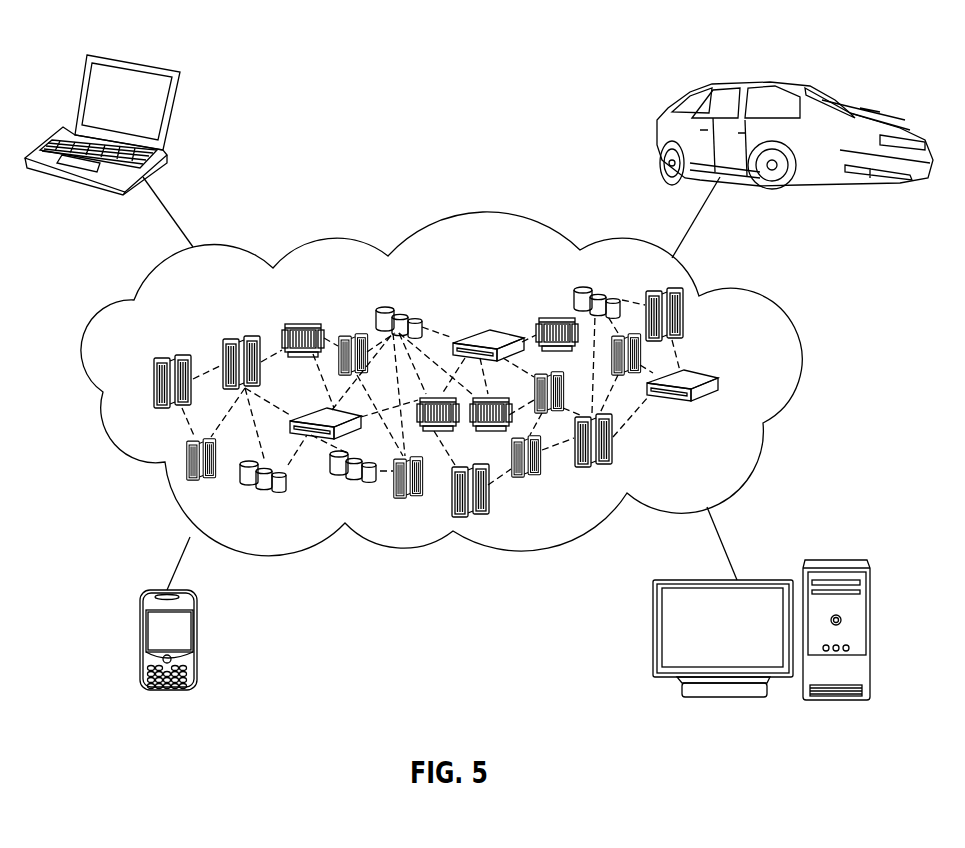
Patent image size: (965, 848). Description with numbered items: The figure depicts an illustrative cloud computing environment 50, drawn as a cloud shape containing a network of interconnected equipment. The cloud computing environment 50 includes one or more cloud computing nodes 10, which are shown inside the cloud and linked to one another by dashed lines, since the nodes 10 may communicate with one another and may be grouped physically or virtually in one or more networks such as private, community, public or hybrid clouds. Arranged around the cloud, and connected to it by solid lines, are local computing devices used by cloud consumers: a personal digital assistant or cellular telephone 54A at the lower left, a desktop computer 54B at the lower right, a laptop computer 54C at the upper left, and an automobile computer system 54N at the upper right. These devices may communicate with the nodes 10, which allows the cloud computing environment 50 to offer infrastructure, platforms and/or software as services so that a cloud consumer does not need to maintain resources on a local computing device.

The cloud computing node 10 is at (804, 401).
The cloud computing environment 50 is at (772, 310).
The personal digital assistant or cellular telephone 54A is at (140, 647).
The desktop computer 54B is at (840, 560).
The laptop computer 54C is at (177, 112).
The automobile computer system 54N is at (662, 122).